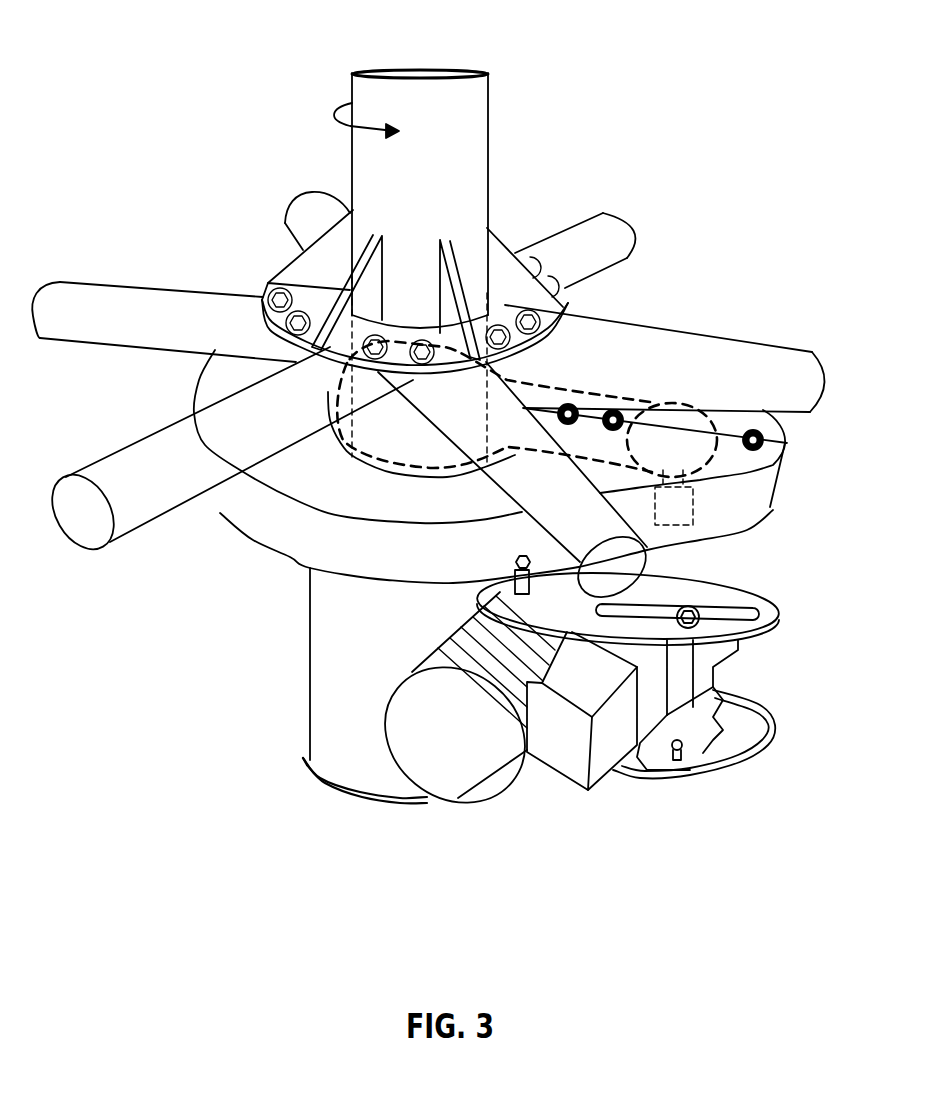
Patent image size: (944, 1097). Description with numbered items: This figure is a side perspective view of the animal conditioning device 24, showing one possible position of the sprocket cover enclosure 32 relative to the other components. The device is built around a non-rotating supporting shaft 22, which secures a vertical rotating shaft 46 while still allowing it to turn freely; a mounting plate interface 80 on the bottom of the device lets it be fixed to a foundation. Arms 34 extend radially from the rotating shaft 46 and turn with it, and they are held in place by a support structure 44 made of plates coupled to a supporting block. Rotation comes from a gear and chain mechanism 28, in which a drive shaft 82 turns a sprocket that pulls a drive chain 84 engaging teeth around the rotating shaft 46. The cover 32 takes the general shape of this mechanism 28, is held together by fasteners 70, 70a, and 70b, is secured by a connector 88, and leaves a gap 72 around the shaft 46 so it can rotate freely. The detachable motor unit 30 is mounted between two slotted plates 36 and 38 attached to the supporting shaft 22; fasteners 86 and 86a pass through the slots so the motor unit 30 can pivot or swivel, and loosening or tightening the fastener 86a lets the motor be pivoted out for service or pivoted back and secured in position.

The animal conditioning device 24 is at (190, 64).
The supporting shaft 22 is at (328, 668).
The gear and chain mechanism 28 is at (738, 453).
The motor unit 30 is at (526, 775).
The sprocket cover enclosure 32 is at (207, 490).
The arms 34 is at (757, 343).
The slotted plate 36 is at (720, 753).
The slotted plate 38 is at (743, 547).
The support structure 44 is at (265, 294).
The rotating shaft 46 is at (398, 427).
The fastener 70 is at (754, 430).
The fastener 70a is at (615, 410).
The fastener 70b is at (567, 403).
The gap 72 is at (340, 447).
The mounting plate interface 80 is at (330, 782).
The drive shaft 82 is at (693, 495).
The drive belt or chain 84 is at (340, 433).
The fastener 86 is at (677, 757).
The fastener 86a is at (742, 580).
The connector 88 is at (513, 584).